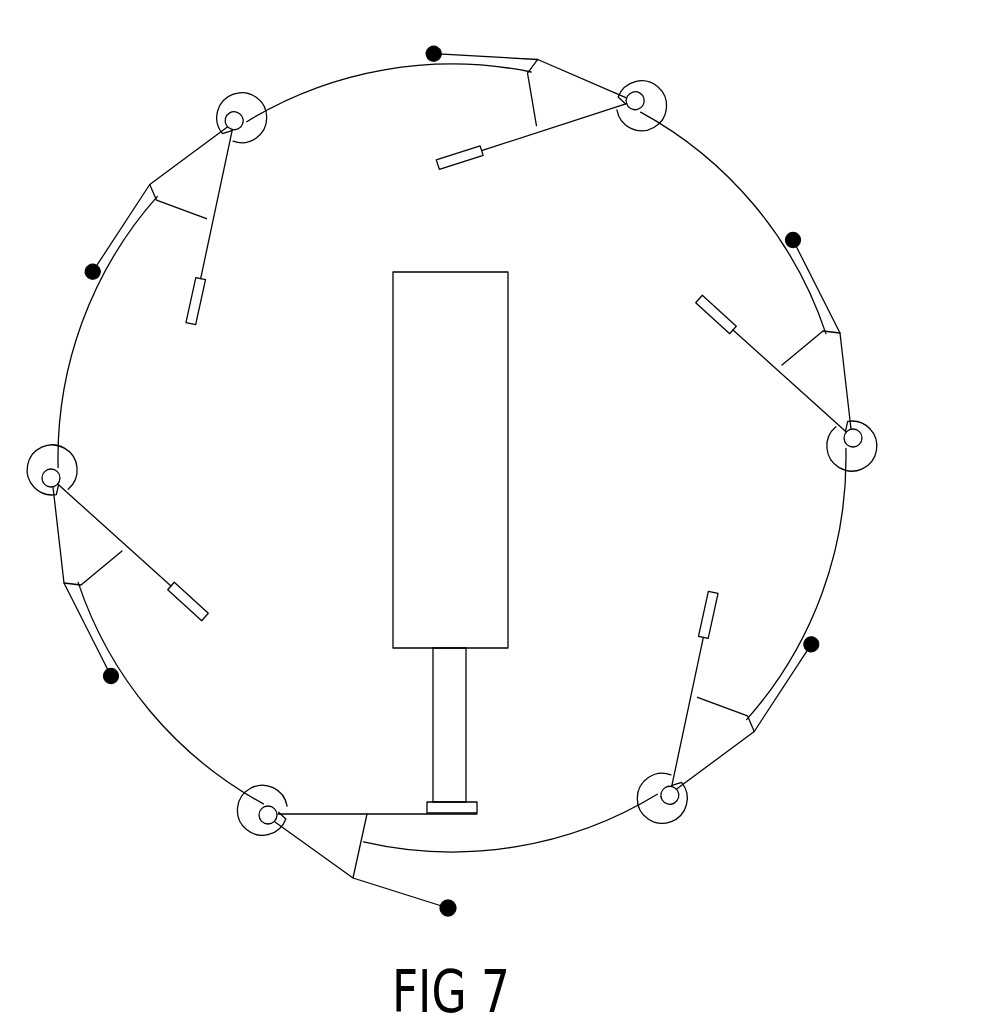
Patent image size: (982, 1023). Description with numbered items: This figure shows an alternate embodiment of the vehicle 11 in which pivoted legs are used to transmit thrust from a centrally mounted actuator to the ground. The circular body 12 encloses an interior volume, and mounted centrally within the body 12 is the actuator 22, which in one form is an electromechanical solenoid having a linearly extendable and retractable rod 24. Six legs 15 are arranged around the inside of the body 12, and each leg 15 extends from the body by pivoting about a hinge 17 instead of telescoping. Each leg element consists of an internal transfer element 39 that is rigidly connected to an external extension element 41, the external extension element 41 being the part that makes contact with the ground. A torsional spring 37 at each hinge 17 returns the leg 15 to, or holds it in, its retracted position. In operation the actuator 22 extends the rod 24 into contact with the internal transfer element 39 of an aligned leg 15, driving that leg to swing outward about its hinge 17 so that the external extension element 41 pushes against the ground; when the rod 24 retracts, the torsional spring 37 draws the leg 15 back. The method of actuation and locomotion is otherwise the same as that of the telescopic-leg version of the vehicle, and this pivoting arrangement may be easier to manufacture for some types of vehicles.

The vehicle 11 is at (157, 107).
The body 12 is at (172, 738).
The leg 15 is at (320, 860).
The hinge 17 is at (281, 803).
The actuator 22 is at (497, 491).
The rod 24 is at (460, 694).
The torsional spring 37 is at (255, 838).
The internal transfer element 39 is at (397, 813).
The external extension element 41 is at (392, 892).